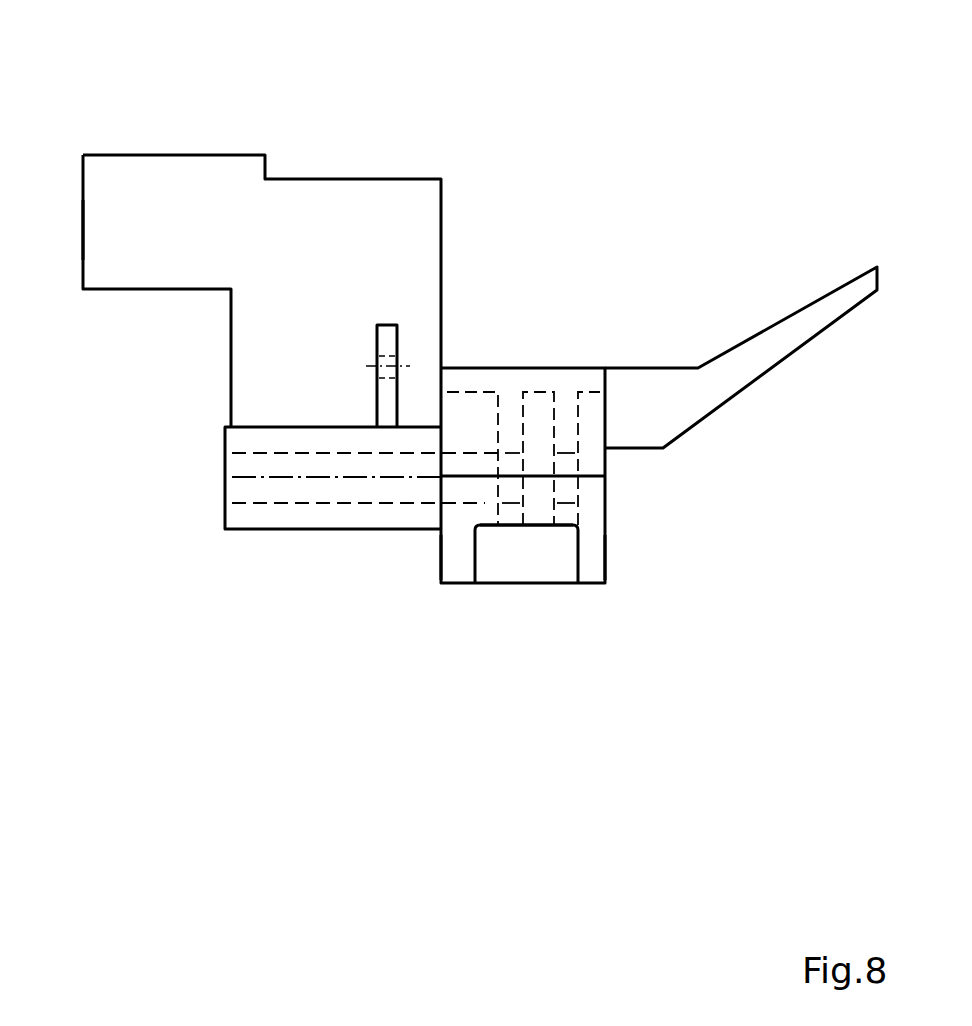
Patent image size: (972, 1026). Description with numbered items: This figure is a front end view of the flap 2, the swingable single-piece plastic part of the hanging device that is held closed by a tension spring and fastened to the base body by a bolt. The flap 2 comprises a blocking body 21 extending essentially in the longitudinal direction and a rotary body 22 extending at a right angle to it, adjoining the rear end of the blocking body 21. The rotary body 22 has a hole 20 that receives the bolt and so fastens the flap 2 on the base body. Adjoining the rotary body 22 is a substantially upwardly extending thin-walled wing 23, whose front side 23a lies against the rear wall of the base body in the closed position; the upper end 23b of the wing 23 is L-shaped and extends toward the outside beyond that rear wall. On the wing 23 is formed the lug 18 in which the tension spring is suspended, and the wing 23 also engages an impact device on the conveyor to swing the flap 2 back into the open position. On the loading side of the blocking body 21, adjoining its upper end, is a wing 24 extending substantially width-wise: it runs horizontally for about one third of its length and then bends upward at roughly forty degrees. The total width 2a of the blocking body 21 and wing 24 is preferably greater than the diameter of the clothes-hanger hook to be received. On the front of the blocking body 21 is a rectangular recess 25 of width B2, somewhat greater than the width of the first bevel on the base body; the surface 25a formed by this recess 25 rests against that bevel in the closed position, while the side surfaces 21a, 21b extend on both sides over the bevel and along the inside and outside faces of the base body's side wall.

The flap 2 is at (718, 102).
The total width 2a is at (881, 267).
The lug 18 is at (392, 362).
The hole 20 is at (247, 463).
The blocking body 21 is at (512, 387).
The side surface 21a is at (452, 559).
The side surface 21b is at (595, 557).
The rotary body 22 is at (277, 440).
The wing 23 is at (375, 222).
The front side 23a is at (355, 292).
The upper end 23b is at (119, 204).
The wing 24 is at (724, 370).
The rectangular recess 25 is at (551, 563).
The surface 25a is at (509, 525).
The width B2 is at (475, 583).